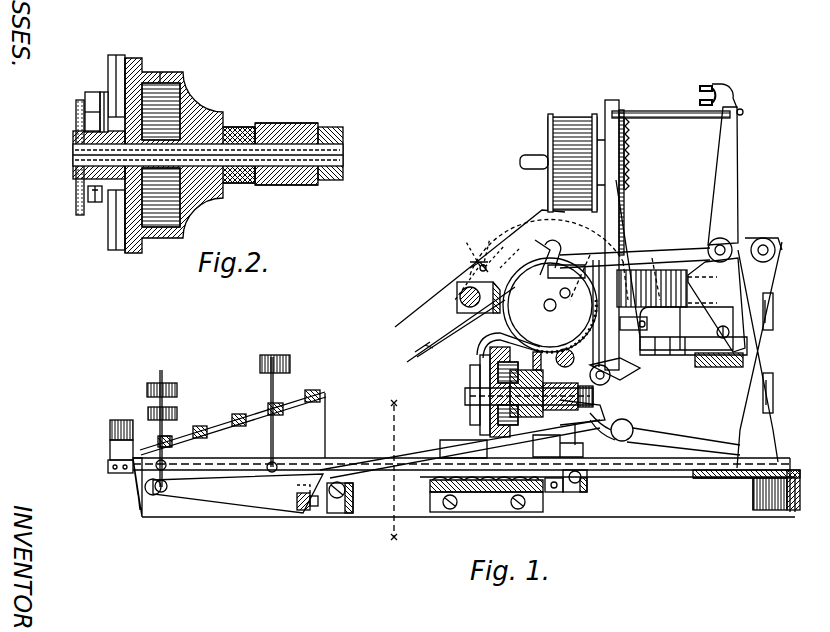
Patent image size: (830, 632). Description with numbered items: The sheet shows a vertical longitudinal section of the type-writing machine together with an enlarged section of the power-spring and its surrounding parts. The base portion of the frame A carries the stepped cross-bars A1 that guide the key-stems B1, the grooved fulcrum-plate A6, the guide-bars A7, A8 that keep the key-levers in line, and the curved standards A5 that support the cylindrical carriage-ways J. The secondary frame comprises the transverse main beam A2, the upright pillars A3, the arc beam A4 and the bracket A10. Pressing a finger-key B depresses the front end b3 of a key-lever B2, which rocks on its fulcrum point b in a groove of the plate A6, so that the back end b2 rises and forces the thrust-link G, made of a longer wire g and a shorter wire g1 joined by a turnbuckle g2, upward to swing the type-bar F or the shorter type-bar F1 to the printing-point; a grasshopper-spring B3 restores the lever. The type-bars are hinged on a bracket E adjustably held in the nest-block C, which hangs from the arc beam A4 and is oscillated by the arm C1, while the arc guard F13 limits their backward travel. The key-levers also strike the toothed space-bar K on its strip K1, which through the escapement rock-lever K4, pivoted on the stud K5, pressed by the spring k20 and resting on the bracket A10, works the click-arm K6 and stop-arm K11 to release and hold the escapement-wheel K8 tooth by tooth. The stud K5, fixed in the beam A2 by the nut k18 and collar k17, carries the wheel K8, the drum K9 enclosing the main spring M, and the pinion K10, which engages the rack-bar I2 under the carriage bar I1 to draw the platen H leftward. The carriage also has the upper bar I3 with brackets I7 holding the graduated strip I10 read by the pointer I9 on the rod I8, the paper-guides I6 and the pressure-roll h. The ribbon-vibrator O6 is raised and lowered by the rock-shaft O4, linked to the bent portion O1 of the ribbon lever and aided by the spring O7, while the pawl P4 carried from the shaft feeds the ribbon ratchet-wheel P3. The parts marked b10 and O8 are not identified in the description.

In FIG. 2, the drum K9 is at (203, 110).
In FIG. 1, the drum K9 is at (545, 420).
In FIG. 2, the escapement-wheel K8 is at (135, 70).
In FIG. 1, the escapement-wheel K8 is at (491, 402).
In FIG. 2, the main spring M is at (180, 70).
In FIG. 2, the collar k17 is at (232, 126).
In FIG. 2, the transverse main beam A2 is at (290, 124).
In FIG. 1, the transverse main beam A2 is at (606, 418).
In FIG. 2, the nut k18 is at (342, 140).
In FIG. 2, the stud K5 is at (295, 186).
In FIG. 2, the pinion K10 is at (240, 98).
In FIG. 2, the escapement rock-lever K4 is at (80, 172).
In FIG. 1, the escapement rock-lever K4 is at (470, 380).
In FIG. 2, the stop-arm K11 is at (116, 225).
In FIG. 2, the click arm K6 is at (106, 92).
In FIG. 2, the spring k20 is at (92, 100).
In FIG. 2, the bracket A10 is at (92, 206).
In FIG. 1, the key-levers B2 is at (226, 458).
In FIG. 1, the bracket b10 is at (137, 512).
In FIG. 1, the front end of key-lever b3 is at (162, 505).
In FIG. 1, the space-bar K is at (252, 500).
In FIG. 1, the strip K1 is at (300, 512).
In FIG. 1, the transverse guide-bar A7 is at (354, 492).
In FIG. 1, the frame A is at (311, 425).
In FIG. 1, the cross-bars A1 is at (140, 452).
In FIG. 1, the finger-keys B is at (183, 410).
In FIG. 1, the key-stems B1 is at (160, 406).
In FIG. 1, the fulcrum points b is at (466, 492).
In FIG. 1, the grooved fulcrum-plate A6 is at (494, 492).
In FIG. 1, the transverse guide-bar A8 is at (585, 493).
In FIG. 1, the back end of key-lever b2 is at (787, 463).
In FIG. 1, the rack-bar I2 is at (470, 362).
In FIG. 1, the platen H is at (550, 305).
In FIG. 1, the carriage-ways J is at (458, 294).
In FIG. 1, the pin O8 is at (575, 286).
In FIG. 1, the carriage bar I1 is at (475, 335).
In FIG. 1, the paper-guides I6 is at (440, 320).
In FIG. 1, the upper carriage-bar I3 is at (465, 284).
In FIG. 1, the rod I8 is at (470, 268).
In FIG. 1, the brackets I7 is at (467, 243).
In FIG. 1, the pressure-roll h is at (492, 242).
In FIG. 1, the pointer I9 is at (515, 250).
In FIG. 1, the curved standards A5 is at (547, 235).
In FIG. 1, the graduated strip I10 is at (540, 248).
In FIG. 1, the ratchet-wheel P3 is at (598, 120).
In FIG. 1, the spring-pawl P4 is at (620, 214).
In FIG. 1, the upright pillars A3 is at (618, 180).
In FIG. 1, the spring O7 is at (642, 112).
In FIG. 1, the hook F13 is at (704, 113).
In FIG. 1, the type-bar F is at (737, 185).
In FIG. 1, the bracket E is at (716, 305).
In FIG. 1, the longer wire g is at (776, 300).
In FIG. 1, the turnbuckle g2 is at (776, 330).
In FIG. 1, the shorter wire g1 is at (782, 284).
In FIG. 1, the thrust-link G is at (785, 364).
In FIG. 1, the nest-block C is at (675, 310).
In FIG. 1, the arm C1 is at (644, 325).
In FIG. 1, the arc beam A4 is at (745, 360).
In FIG. 1, the ribbon-vibrating arm O6 is at (630, 240).
In FIG. 1, the rocking shaft O4 is at (625, 255).
In FIG. 1, the shorter type-bar F1 is at (670, 258).
In FIG. 1, the bent portion of ribbon lever O1 is at (640, 378).
In FIG. 1, the grasshopper-springs B3 is at (634, 430).